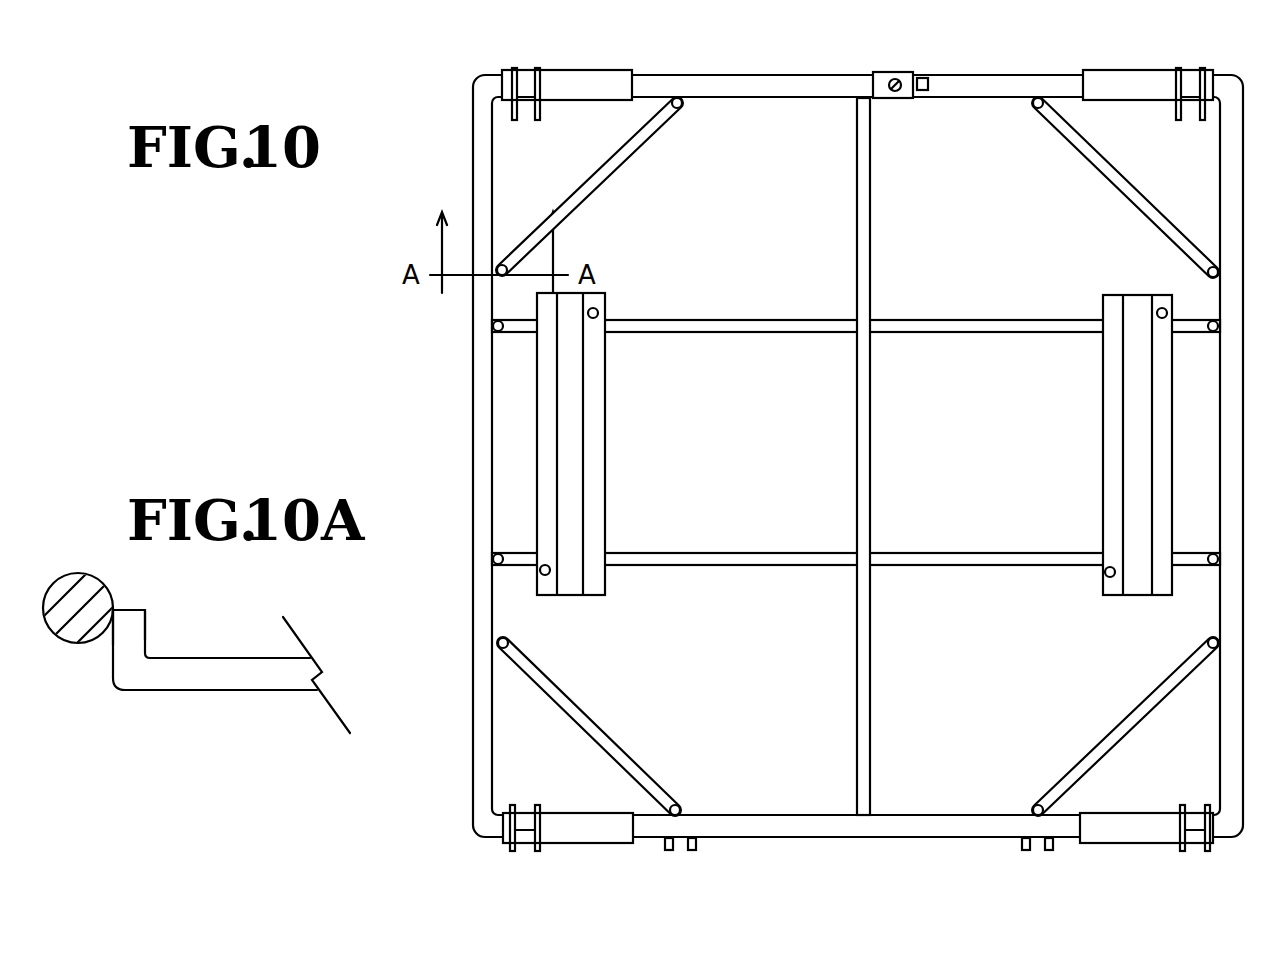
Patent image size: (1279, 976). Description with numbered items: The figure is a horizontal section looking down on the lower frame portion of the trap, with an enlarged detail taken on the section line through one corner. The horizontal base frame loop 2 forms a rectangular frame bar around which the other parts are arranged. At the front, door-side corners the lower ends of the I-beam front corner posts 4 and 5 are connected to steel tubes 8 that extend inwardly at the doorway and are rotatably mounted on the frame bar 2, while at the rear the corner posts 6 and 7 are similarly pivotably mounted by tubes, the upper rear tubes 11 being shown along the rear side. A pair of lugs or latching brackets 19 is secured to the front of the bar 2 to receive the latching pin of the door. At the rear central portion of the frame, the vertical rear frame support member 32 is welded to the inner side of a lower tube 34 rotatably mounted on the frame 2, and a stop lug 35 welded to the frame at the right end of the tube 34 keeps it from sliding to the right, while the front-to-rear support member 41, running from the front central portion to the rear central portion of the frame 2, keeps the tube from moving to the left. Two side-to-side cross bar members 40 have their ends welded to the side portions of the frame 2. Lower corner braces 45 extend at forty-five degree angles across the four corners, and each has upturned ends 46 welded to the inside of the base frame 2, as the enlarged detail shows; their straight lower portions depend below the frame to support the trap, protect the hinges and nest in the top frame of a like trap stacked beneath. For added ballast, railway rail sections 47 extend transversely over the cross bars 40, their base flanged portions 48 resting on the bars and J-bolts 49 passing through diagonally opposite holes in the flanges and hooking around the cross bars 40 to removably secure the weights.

In FIG. 10, the base frame loop 2 is at (795, 96).
In FIG. 10A, the base frame loop 2 is at (78, 573).
In FIG. 10, the front corner post 4 is at (1180, 831).
In FIG. 10, the front corner post 5 is at (540, 831).
In FIG. 10, the rear corner post 6 is at (1176, 95).
In FIG. 10, the rear corner post 7 is at (541, 97).
In FIG. 10, the steel tube 8 is at (590, 836).
In FIG. 10, the upper rear tube 11 is at (590, 75).
In FIG. 10, the latching bracket 19 is at (669, 852).
In FIG. 10, the rear frame support member 32 is at (894, 92).
In FIG. 10, the lower tube 34 is at (893, 72).
In FIG. 10, the stop lug 35 is at (921, 91).
In FIG. 10, the cross bar member 40 is at (910, 320).
In FIG. 10, the front-to-rear support member 41 is at (856, 405).
In FIG. 10, the lower corner brace 45 is at (614, 162).
In FIG. 10A, the lower corner brace 45 is at (220, 692).
In FIG. 10, the upturned end 46 is at (684, 105).
In FIG. 10A, the upturned end 46 is at (148, 628).
In FIG. 10, the railway rail section 47 is at (605, 298).
In FIG. 10, the base flanged portion 48 is at (536, 468).
In FIG. 10, the J-bolt 49 is at (597, 318).